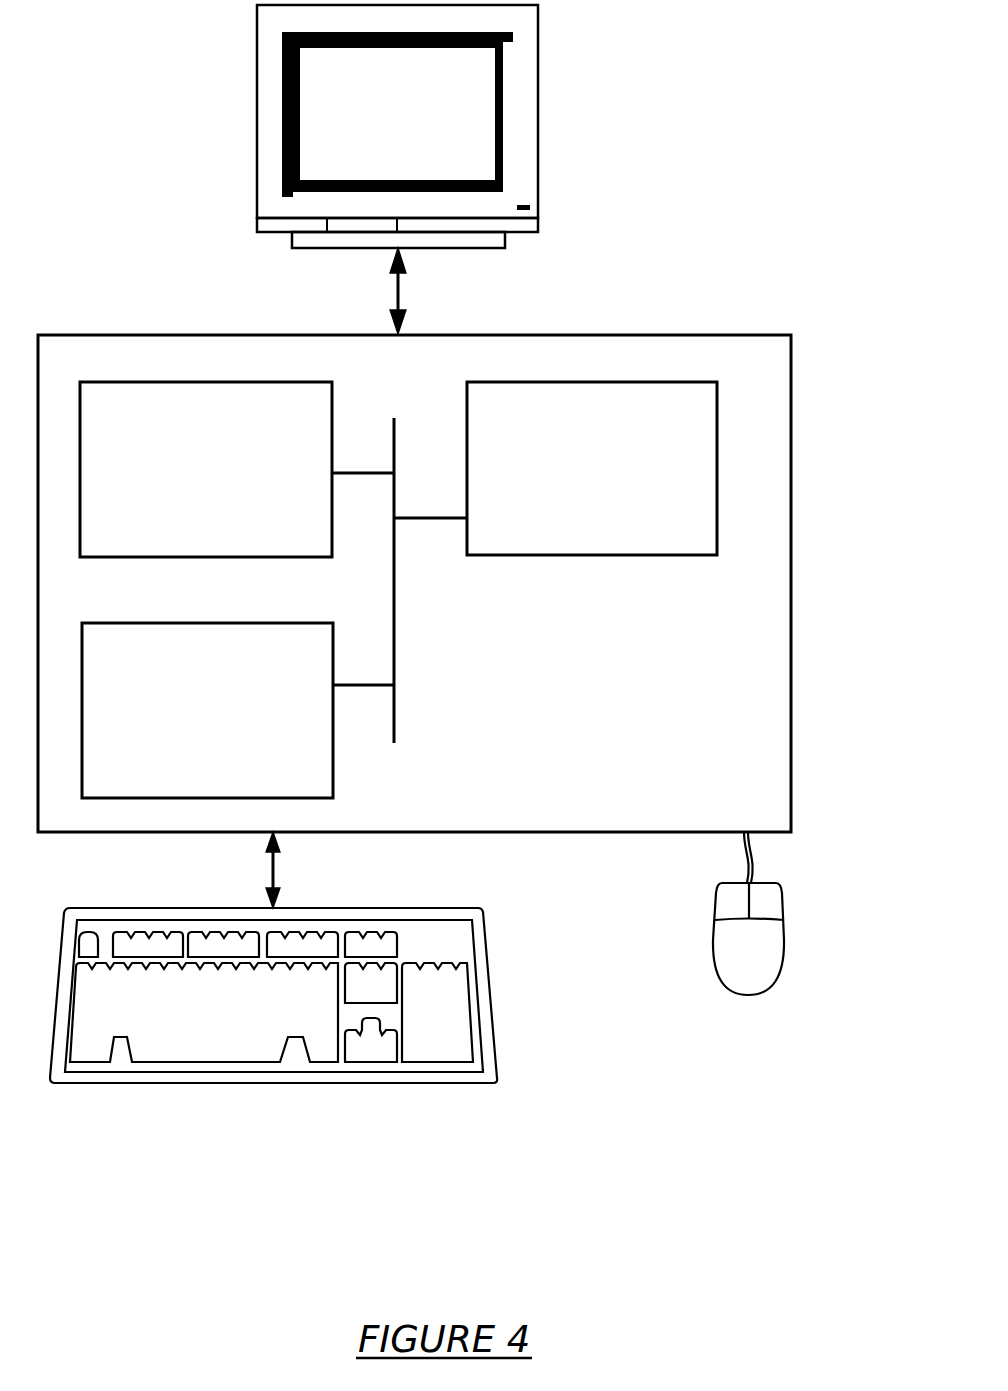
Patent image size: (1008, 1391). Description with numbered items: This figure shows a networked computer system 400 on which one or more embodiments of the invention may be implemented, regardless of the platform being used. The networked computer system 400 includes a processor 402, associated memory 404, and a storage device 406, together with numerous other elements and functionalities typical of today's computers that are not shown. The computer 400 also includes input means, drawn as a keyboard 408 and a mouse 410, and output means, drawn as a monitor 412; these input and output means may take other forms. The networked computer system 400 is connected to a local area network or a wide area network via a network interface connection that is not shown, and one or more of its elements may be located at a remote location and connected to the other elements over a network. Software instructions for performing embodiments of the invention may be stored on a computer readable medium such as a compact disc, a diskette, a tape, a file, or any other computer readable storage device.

The networked computer system 400 is at (808, 178).
The processor 402 is at (569, 481).
The memory 404 is at (184, 481).
The storage device 406 is at (179, 721).
The keyboard 408 is at (179, 1031).
The mouse 410 is at (725, 965).
The monitor 412 is at (375, 131).